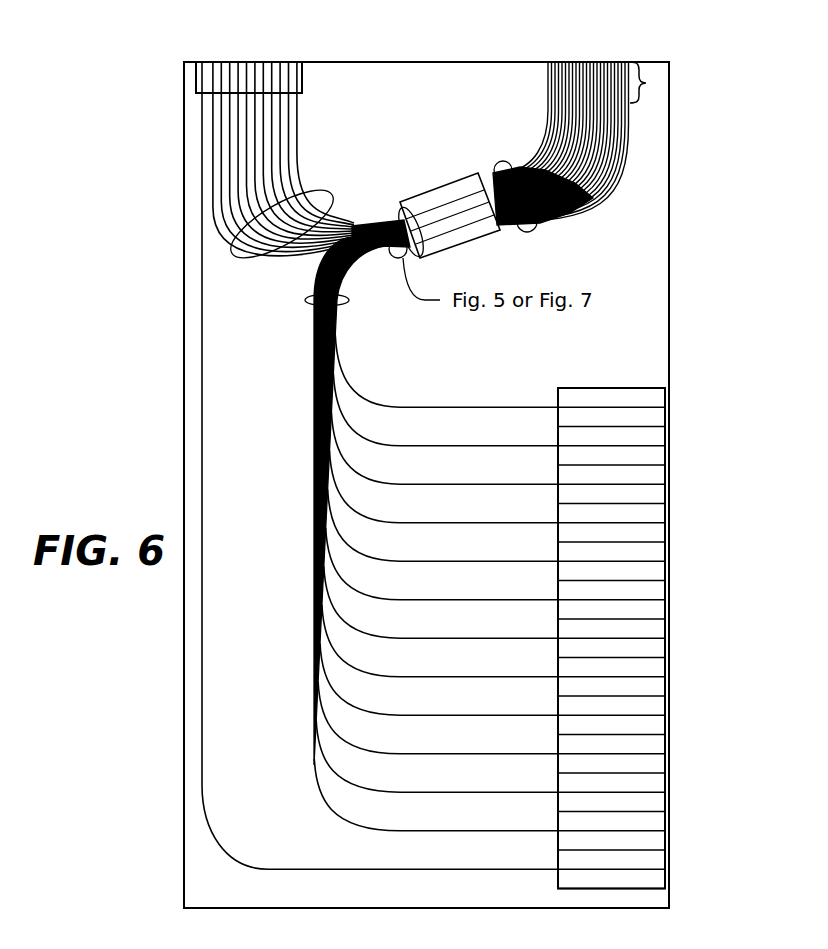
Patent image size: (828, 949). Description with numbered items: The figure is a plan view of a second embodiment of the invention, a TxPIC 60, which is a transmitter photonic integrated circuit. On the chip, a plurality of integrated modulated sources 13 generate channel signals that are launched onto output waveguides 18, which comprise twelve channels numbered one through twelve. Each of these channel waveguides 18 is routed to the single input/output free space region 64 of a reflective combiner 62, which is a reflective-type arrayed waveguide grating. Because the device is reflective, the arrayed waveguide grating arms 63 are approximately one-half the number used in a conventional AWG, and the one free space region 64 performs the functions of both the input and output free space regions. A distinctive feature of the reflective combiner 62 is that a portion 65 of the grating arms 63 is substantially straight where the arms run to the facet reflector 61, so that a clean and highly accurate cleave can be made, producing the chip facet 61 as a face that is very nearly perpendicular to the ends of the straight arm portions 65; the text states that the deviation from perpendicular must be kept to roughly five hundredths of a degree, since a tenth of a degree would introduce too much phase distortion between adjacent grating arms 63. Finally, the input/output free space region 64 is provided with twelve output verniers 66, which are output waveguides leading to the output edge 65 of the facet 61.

The integrated modulated sources 13 is at (665, 383).
The output waveguides 18 is at (305, 300).
The TxPIC 60 is at (451, 93).
The facet reflector 61 is at (603, 61).
The reflective combiner 62 is at (511, 148).
The arrayed waveguide grating arms 63 is at (537, 232).
The input/output free space region 64 is at (443, 200).
The straight arm portions 65 is at (253, 61).
The output verniers 66 is at (331, 197).